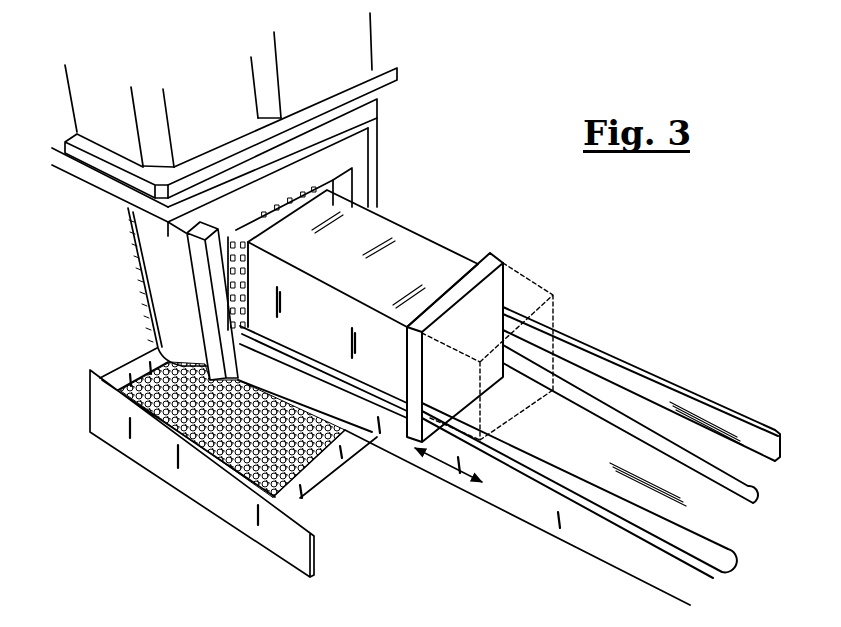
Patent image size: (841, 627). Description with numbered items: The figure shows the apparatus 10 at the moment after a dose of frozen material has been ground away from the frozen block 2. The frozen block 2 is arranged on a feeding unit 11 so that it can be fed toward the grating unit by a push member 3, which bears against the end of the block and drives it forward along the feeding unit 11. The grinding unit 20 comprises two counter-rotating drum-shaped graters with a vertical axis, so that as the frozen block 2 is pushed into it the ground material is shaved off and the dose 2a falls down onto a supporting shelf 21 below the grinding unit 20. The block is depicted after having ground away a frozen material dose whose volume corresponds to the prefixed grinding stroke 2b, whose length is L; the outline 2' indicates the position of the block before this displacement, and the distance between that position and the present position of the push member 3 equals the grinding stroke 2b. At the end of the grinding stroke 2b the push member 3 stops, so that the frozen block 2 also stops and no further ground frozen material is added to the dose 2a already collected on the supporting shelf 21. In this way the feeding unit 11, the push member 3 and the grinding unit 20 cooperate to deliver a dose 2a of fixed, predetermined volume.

The apparatus for loading a cartridge 10 is at (458, 164).
The frozen block 2 is at (358, 302).
The dose 2a is at (167, 381).
The grinding stroke 2b is at (497, 254).
The cartridge in displaced position 2' is at (510, 351).
The push member 3 is at (478, 262).
The feeding unit 11 is at (704, 495).
The grinding unit 20 is at (396, 108).
The supporting shelf 21 is at (131, 378).